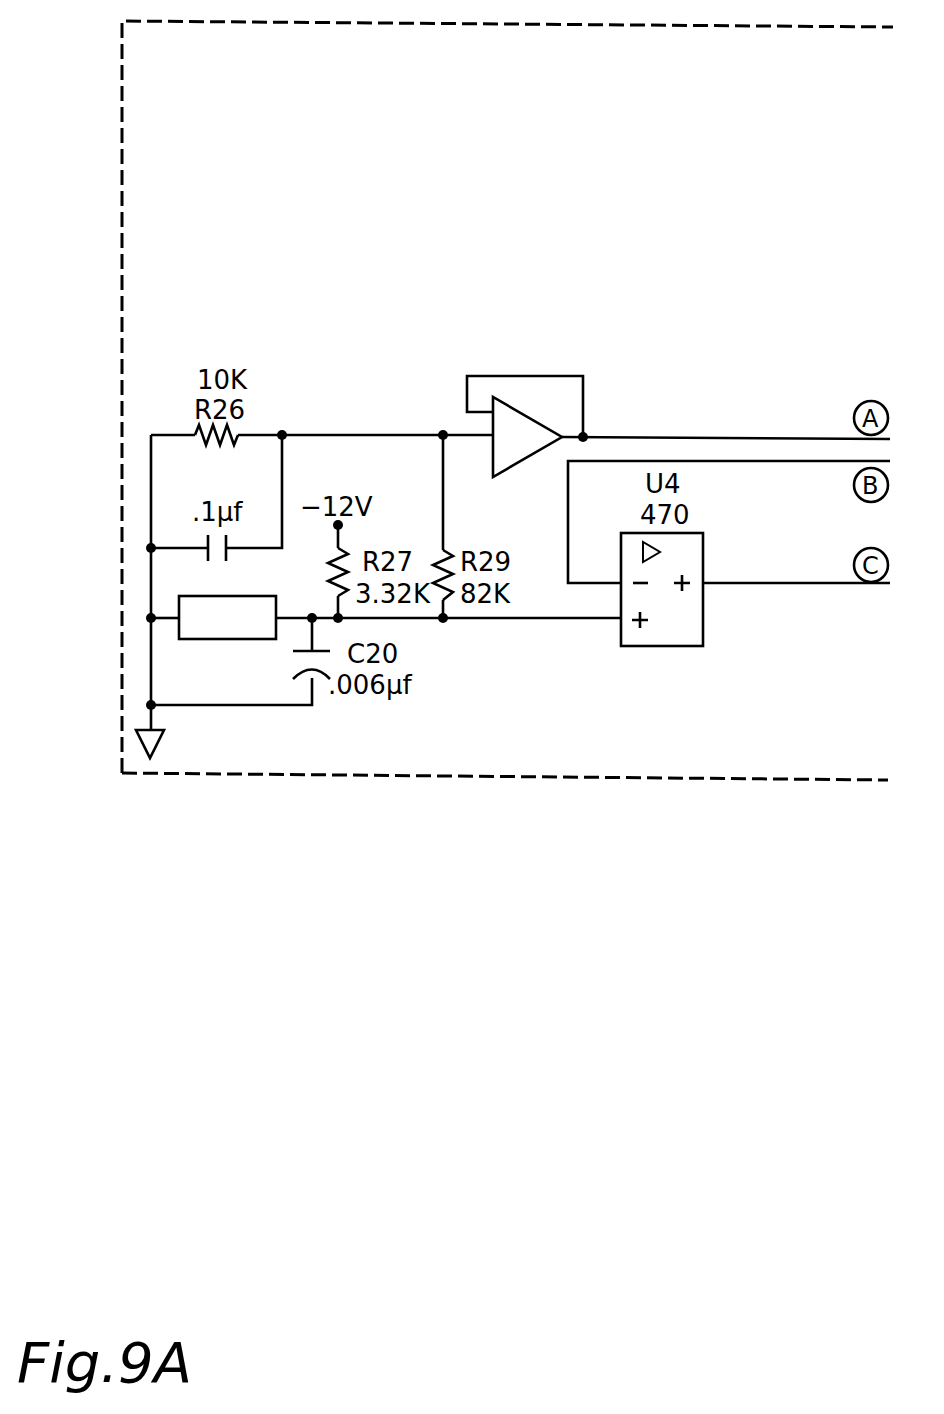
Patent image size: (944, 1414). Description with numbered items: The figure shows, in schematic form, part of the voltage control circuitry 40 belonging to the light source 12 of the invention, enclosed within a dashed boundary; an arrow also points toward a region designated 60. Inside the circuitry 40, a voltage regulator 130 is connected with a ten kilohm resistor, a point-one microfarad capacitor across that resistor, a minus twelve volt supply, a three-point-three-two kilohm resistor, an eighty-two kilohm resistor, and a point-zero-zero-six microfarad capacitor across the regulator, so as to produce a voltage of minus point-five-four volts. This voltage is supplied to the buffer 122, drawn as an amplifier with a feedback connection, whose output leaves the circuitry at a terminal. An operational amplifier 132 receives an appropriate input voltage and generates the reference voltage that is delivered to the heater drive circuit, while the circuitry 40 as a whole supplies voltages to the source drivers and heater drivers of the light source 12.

The voltage control circuitry 40 is at (412, 22).
The buffer 122 is at (527, 467).
The voltage regulator 130 is at (239, 640).
The operational amplifier 132 is at (668, 647).
The light source 12 is at (523, 842).
The signal output lead 60 is at (500, 1135).